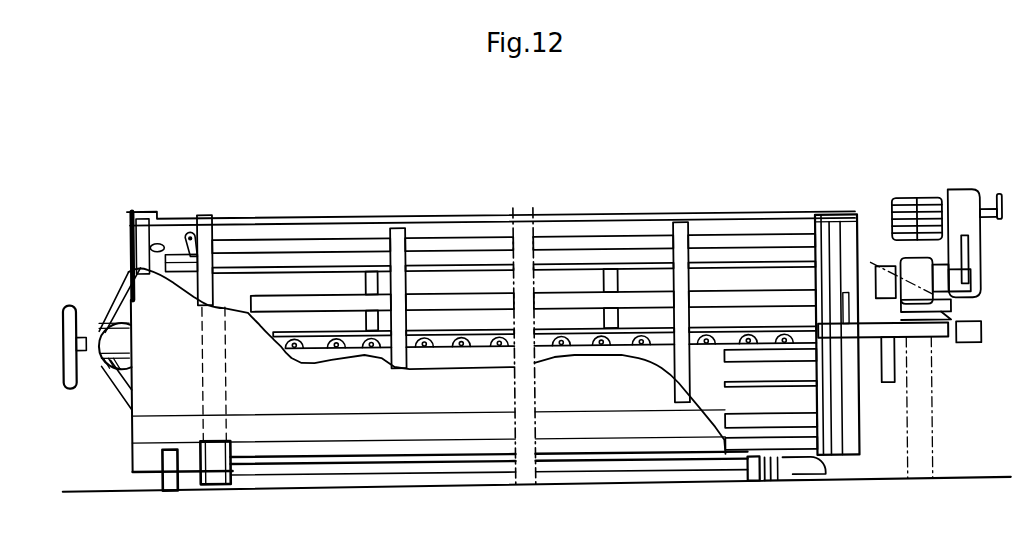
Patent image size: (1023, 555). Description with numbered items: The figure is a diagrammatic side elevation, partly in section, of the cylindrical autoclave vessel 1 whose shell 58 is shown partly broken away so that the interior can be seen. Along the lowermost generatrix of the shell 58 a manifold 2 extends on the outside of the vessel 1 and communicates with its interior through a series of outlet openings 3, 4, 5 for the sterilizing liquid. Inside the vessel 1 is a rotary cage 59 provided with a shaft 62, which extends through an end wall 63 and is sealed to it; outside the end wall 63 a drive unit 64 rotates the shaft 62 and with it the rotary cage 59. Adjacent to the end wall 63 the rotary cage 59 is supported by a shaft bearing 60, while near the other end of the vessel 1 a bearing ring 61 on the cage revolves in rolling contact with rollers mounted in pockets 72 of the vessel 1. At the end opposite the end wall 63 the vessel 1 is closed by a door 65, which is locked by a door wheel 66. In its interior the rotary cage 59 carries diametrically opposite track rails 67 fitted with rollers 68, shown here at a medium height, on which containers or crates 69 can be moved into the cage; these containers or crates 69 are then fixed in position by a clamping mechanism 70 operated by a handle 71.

The vessel 1 is at (152, 428).
The manifold 2 is at (701, 470).
The outlet opening 3 is at (767, 468).
The outlet opening 4 is at (786, 466).
The outlet opening 5 is at (806, 468).
The shell 58 is at (661, 437).
The rotary cage 59 is at (566, 270).
The shaft bearing 60 is at (845, 328).
The bearing ring 61 is at (207, 240).
The shaft 62 is at (766, 338).
The end wall 63 is at (848, 382).
The drive unit 64 is at (918, 269).
The door 65 is at (140, 262).
The door wheel 66 is at (121, 300).
The track rail 67 is at (447, 356).
The roller 68 is at (370, 352).
The container or crate 69 is at (801, 272).
The clamping mechanism 70 is at (441, 240).
The handle 71 is at (157, 243).
The pocket 72 is at (211, 486).